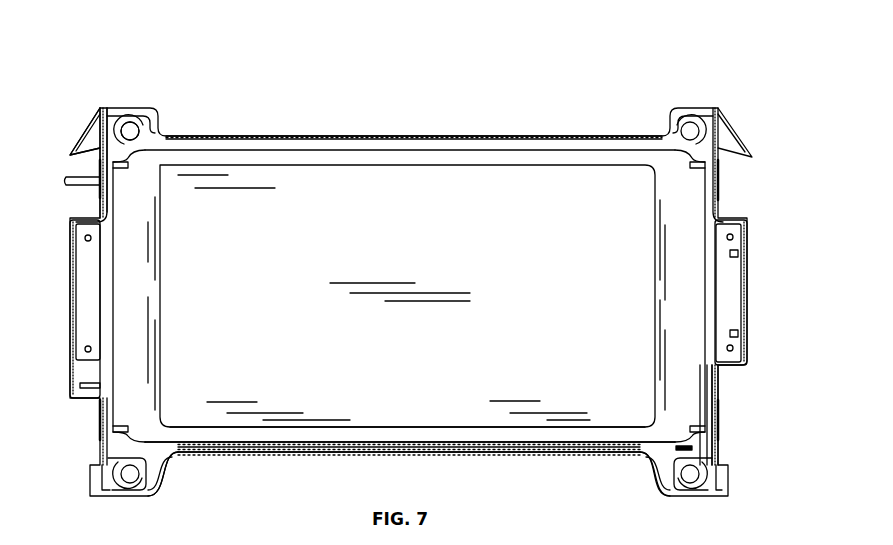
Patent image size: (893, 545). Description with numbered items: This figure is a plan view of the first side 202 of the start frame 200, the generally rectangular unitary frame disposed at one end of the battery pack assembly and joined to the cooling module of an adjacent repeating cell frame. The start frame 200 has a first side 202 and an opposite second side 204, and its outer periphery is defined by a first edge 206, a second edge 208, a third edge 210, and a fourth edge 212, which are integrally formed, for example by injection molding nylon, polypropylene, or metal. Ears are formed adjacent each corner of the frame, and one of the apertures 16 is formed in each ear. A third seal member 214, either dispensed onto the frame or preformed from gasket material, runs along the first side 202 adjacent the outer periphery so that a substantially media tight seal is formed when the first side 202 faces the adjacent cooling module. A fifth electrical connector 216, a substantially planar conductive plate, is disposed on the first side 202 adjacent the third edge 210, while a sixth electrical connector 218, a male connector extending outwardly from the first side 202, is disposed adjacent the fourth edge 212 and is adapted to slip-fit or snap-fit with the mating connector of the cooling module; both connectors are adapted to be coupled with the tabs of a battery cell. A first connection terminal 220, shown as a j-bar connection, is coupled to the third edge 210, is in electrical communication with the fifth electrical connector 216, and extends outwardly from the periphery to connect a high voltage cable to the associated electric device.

The start frame 200 is at (713, 74).
The aperture 16 is at (131, 125).
The first edge 206 is at (403, 136).
The first connection terminal 220 is at (68, 174).
The third edge 210 is at (100, 206).
The fifth electrical connector 216 is at (88, 302).
The sixth electrical connector 218 is at (735, 294).
The fourth edge 212 is at (718, 390).
The third seal member 214 is at (186, 456).
The second edge 208 is at (335, 456).
The first side 202 is at (510, 437).
The second side 204 is at (570, 437).